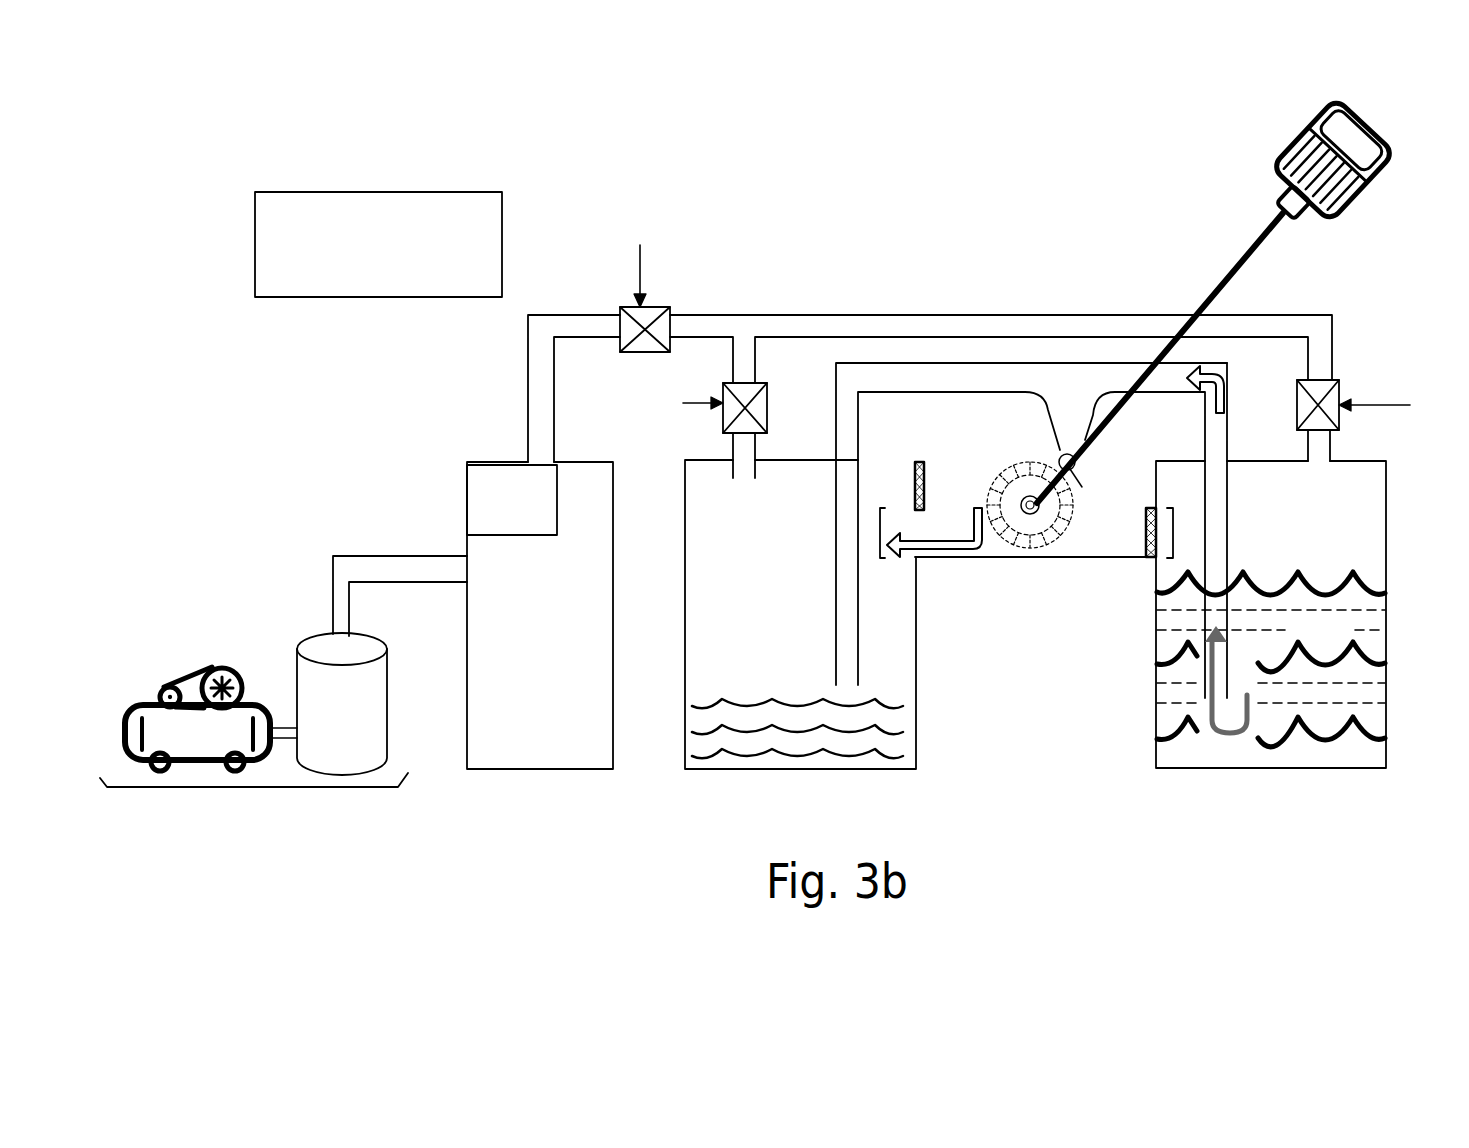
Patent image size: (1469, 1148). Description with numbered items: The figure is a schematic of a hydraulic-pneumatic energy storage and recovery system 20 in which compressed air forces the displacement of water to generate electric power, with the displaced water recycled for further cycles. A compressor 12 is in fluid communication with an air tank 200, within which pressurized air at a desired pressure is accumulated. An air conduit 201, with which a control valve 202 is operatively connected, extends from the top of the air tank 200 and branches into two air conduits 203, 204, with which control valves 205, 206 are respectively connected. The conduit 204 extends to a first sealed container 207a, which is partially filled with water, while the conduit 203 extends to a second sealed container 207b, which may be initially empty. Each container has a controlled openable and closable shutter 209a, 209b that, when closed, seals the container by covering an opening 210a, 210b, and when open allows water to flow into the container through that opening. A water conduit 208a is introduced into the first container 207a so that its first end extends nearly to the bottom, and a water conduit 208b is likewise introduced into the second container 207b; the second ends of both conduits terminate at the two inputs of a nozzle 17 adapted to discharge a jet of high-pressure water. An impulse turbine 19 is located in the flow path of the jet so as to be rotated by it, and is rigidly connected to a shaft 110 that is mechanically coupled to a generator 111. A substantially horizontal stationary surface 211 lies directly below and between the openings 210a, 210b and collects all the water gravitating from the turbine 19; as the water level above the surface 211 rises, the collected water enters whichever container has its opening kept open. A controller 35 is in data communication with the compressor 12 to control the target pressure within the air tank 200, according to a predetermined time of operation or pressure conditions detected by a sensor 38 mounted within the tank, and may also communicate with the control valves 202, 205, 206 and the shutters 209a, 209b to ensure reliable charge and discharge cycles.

The compressor 12 is at (247, 787).
The nozzle 17 is at (1050, 450).
The impulse turbine 19 is at (1035, 523).
The hydraulic-pneumatic energy storage and recovery system 20 is at (572, 825).
The controller 35 is at (385, 197).
The sensor 38 is at (487, 482).
The shaft 110 is at (1215, 288).
The generator 111 is at (1363, 205).
The air tank 200 is at (467, 729).
The air conduit 201 is at (707, 327).
The control valve 202 is at (625, 307).
The air conduit 203 is at (1325, 450).
The air conduit 204 is at (747, 452).
The control valve 205 is at (1340, 390).
The control valve 206 is at (720, 417).
The first sealed container 207a is at (683, 590).
The second sealed container 207b is at (1387, 672).
The water conduit 208a is at (843, 432).
The water conduit 208b is at (1218, 437).
The shutter 209a is at (925, 483).
The shutter 209b is at (1145, 533).
The opening 210a is at (880, 540).
The opening 210b is at (1173, 537).
The stationary surface 211 is at (1093, 557).